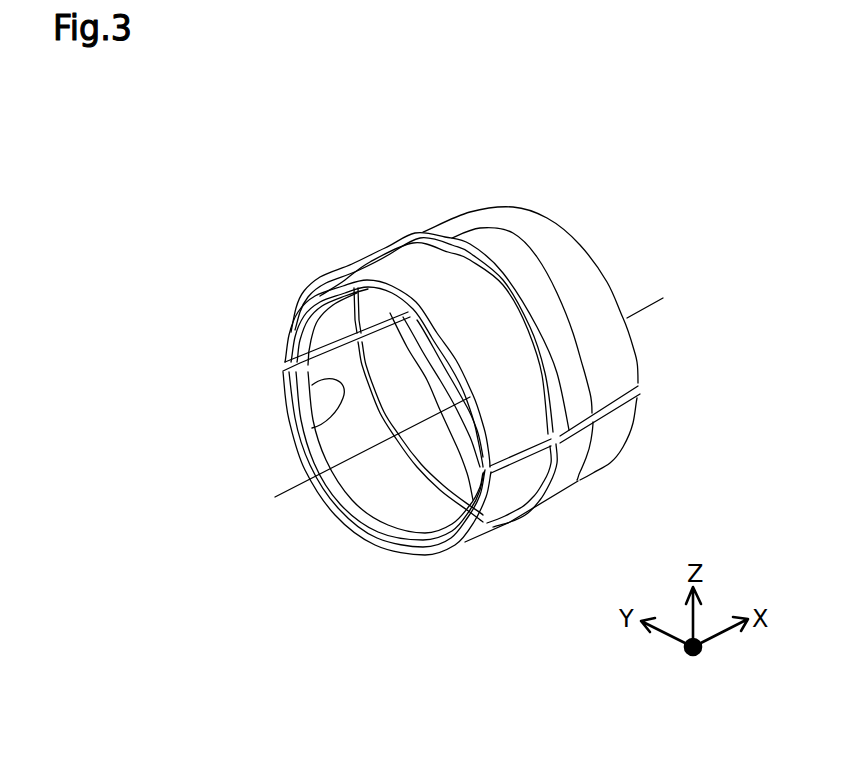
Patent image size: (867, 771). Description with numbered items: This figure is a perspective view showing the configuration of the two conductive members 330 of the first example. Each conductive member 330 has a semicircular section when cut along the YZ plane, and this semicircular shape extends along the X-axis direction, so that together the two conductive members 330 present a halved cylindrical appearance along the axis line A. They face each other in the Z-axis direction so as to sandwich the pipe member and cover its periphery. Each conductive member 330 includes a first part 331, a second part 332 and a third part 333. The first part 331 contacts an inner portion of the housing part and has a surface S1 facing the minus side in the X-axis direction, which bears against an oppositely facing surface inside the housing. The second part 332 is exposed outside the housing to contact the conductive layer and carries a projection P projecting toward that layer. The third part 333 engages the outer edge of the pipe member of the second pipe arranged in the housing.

The conductive member 330 is at (510, 138).
The first part 331 is at (425, 233).
The second part 332 is at (353, 267).
The third part 333 is at (498, 227).
The surface S1 is at (403, 241).
The axis line A is at (630, 318).
The projection P is at (312, 386).